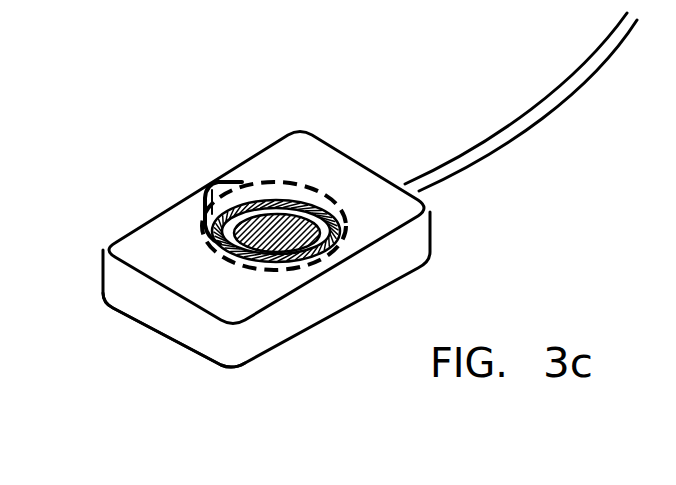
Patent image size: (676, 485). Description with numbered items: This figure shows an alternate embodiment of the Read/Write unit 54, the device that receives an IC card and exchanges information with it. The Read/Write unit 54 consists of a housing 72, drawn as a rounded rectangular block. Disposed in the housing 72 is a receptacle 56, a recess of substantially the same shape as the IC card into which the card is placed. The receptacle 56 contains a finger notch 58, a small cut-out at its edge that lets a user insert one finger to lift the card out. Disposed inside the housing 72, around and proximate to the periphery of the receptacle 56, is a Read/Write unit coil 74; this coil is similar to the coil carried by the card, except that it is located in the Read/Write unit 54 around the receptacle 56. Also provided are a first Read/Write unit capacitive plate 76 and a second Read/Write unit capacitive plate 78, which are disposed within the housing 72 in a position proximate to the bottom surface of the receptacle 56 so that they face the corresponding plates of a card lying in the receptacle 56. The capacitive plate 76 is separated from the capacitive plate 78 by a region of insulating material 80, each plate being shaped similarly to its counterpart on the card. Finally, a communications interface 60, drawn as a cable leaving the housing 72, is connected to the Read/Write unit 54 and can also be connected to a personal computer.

The Read/Write unit 54 is at (121, 305).
The receptacle 56 is at (287, 180).
The finger notch 58 is at (243, 180).
The communications interface 60 is at (553, 103).
The housing 72 is at (385, 270).
The Read/Write unit coil 74 is at (248, 267).
The first Read/Write unit capacitive plate 76 is at (257, 183).
The second Read/Write unit capacitive plate 78 is at (292, 264).
The region of insulating material 80 is at (207, 213).